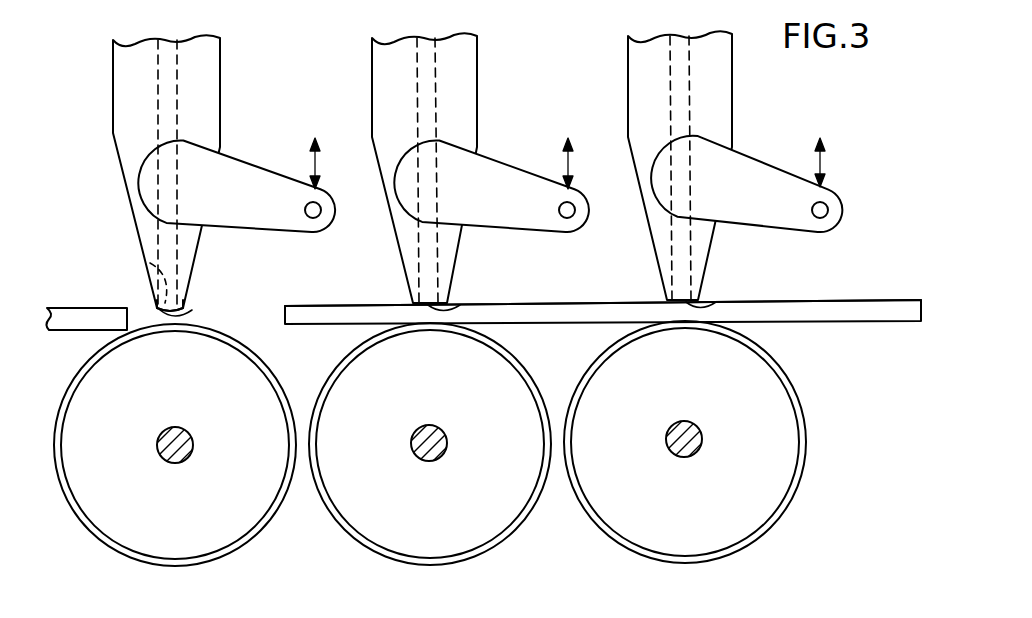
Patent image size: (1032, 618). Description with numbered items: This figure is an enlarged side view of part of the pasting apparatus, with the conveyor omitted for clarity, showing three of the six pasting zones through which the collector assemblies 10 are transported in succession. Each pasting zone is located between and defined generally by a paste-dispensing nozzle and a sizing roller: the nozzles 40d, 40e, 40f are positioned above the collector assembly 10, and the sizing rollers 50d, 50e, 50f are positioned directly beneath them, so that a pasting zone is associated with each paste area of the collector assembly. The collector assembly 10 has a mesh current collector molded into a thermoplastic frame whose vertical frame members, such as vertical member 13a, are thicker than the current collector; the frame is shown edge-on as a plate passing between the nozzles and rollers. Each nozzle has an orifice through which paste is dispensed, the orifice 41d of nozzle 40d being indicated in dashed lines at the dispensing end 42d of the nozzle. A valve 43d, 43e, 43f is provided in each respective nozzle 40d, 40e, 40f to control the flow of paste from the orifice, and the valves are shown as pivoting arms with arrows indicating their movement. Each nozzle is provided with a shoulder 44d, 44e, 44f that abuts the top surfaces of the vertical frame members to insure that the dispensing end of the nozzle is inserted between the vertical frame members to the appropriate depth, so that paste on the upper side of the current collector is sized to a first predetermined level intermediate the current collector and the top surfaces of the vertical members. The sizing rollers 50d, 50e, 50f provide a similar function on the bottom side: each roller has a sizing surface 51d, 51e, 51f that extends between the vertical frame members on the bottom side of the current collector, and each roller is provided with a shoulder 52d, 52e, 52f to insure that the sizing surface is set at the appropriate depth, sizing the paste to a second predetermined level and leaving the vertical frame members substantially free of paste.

The collector assembly 10 is at (49, 292).
The vertical member 13a is at (847, 311).
The paste-dispensing nozzle 40d is at (122, 85).
The paste-dispensing nozzle 40e is at (380, 85).
The paste-dispensing nozzle 40f is at (637, 87).
The orifice 41d is at (150, 263).
The dispensing end 42d is at (166, 311).
The valve 43d is at (247, 173).
The valve 43e is at (507, 173).
The valve 43f is at (760, 176).
The shoulder 44d is at (178, 316).
The shoulder 44e is at (455, 306).
The shoulder 44f is at (716, 305).
The sizing roller 50d is at (223, 528).
The sizing roller 50e is at (470, 527).
The sizing roller 50f is at (735, 519).
The sizing surface 51d is at (263, 358).
The sizing surface 51e is at (513, 355).
The sizing surface 51f is at (803, 412).
The shoulder 52d is at (263, 518).
The shoulder 52e is at (517, 518).
The shoulder 52f is at (777, 503).